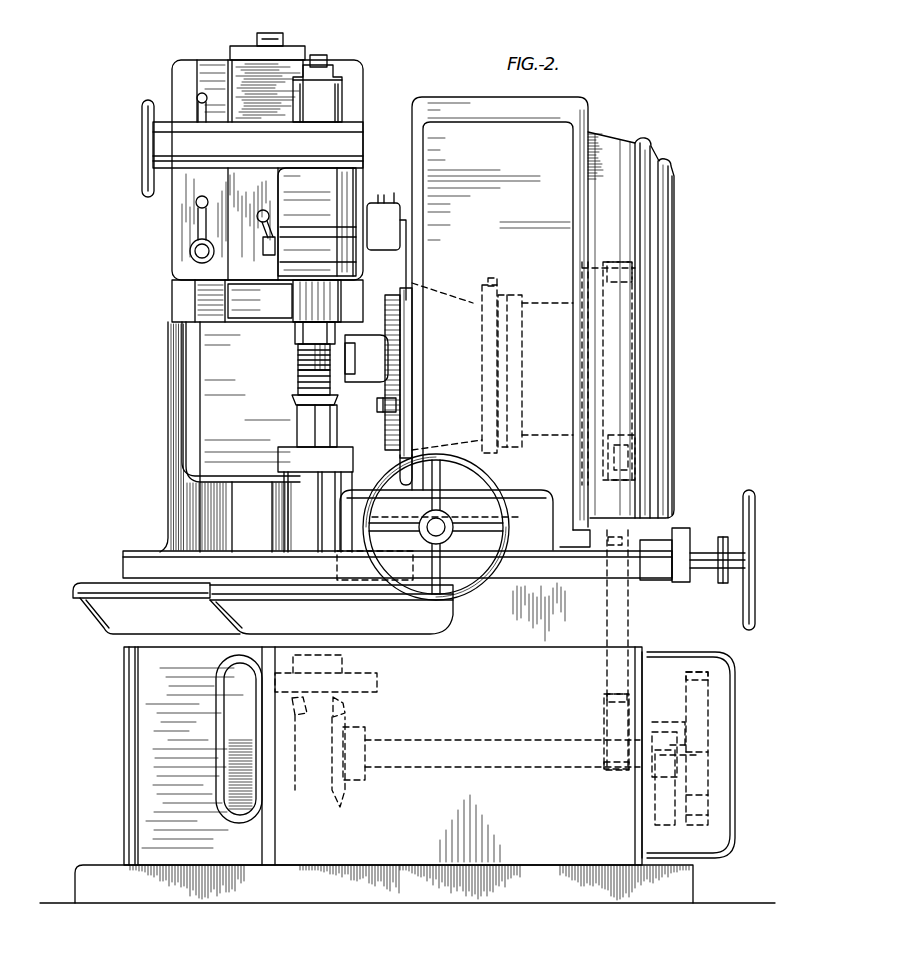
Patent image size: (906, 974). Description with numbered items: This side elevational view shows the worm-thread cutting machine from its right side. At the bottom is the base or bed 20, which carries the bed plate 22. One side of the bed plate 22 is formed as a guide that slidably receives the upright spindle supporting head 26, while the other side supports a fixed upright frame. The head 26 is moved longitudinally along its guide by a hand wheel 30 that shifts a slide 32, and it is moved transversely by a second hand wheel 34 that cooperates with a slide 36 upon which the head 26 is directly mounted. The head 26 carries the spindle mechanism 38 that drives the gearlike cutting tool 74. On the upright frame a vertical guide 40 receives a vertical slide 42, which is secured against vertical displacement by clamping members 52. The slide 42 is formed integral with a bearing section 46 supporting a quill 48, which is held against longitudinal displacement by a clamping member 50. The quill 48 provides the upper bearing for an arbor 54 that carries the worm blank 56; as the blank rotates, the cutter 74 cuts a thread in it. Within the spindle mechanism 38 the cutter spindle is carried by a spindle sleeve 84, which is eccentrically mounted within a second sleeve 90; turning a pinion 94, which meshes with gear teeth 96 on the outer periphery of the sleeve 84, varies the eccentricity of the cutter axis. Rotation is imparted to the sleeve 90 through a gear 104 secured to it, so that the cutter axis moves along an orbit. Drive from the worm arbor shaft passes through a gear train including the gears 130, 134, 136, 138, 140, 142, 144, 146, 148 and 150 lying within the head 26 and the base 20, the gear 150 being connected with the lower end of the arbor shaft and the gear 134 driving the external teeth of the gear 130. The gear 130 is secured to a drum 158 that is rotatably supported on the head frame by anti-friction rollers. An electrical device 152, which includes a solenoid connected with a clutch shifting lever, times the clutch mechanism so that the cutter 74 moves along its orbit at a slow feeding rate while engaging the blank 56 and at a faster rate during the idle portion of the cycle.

The base 20 is at (150, 775).
The bed plate 22 is at (112, 624).
The spindle supporting head 26 is at (501, 322).
The hand wheel 30 is at (756, 605).
The slide 32 is at (652, 530).
The hand wheel 34 is at (500, 560).
The slide 36 is at (535, 493).
The spindle mechanism 38 is at (392, 438).
The vertical guide 40 is at (226, 296).
The vertical slide 42 is at (190, 232).
The bearing section 46 is at (317, 222).
The quill 48 is at (312, 302).
The clamping member 50 is at (264, 210).
The clamping members 52 is at (196, 96).
The arbor 54 is at (310, 330).
The worm blank 56 is at (300, 352).
The gearlike cutting tool 74 is at (312, 378).
The spindle sleeve 84 is at (366, 358).
The second sleeve 90 is at (458, 303).
The pinion 94 is at (396, 406).
The gear teeth 96 is at (395, 357).
The gear 104 is at (492, 280).
The gear 130 is at (628, 260).
The gear 134 is at (637, 493).
The gear 136 is at (632, 608).
The gear 138 is at (604, 709).
The gear 140 is at (710, 684).
The gear 142 is at (708, 780).
The gear 144 is at (655, 814).
The gear 146 is at (668, 722).
The gear 148 is at (348, 714).
The gear 150 is at (296, 743).
The electrical device 152 is at (392, 182).
The drum 158 is at (596, 262).